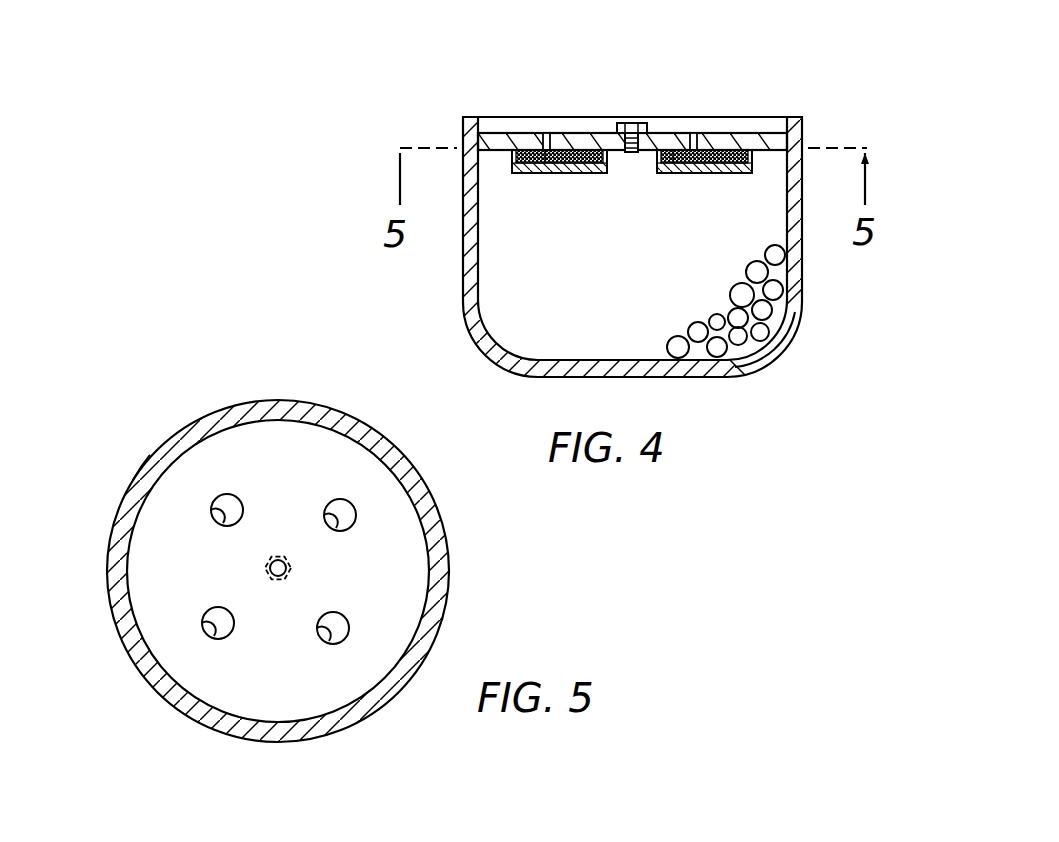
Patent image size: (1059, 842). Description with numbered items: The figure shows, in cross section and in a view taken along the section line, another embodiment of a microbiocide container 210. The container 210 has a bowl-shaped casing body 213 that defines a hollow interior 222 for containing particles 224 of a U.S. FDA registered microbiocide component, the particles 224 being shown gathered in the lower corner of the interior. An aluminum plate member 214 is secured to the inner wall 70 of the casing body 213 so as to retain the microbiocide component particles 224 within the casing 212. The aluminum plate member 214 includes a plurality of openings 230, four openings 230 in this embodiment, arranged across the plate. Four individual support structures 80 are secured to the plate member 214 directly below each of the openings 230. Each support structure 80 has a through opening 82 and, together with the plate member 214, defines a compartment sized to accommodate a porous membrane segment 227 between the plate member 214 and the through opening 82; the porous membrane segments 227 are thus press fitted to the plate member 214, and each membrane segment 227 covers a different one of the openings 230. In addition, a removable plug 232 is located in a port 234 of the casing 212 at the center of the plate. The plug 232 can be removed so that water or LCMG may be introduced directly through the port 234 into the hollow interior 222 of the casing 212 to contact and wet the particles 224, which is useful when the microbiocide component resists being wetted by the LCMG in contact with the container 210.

In FIG. 4, the inner wall 70 is at (463, 128).
In FIG. 4, the support structure 80 is at (633, 198).
In FIG. 4, the through opening 82 is at (563, 173).
In FIG. 4, the container 210 is at (618, 221).
In FIG. 5, the container 210 is at (244, 538).
In FIG. 4, the casing 212 is at (450, 255).
In FIG. 5, the casing 212 is at (132, 660).
In FIG. 4, the bowl-shaped casing body 213 is at (807, 295).
In FIG. 5, the bowl-shaped casing body 213 is at (115, 490).
In FIG. 4, the aluminum plate member 214 is at (638, 76).
In FIG. 5, the aluminum plate member 214 is at (282, 568).
In FIG. 4, the hollow interior 222 is at (600, 339).
In FIG. 4, the particles 224 is at (739, 338).
In FIG. 4, the porous membrane segment 227 is at (550, 156).
In FIG. 4, the openings 230 is at (548, 133).
In FIG. 5, the openings 230 is at (328, 518).
In FIG. 4, the removable plug 232 is at (631, 128).
In FIG. 5, the removable plug 232 is at (286, 570).
In FIG. 4, the port 234 is at (622, 136).
In FIG. 5, the port 234 is at (291, 563).